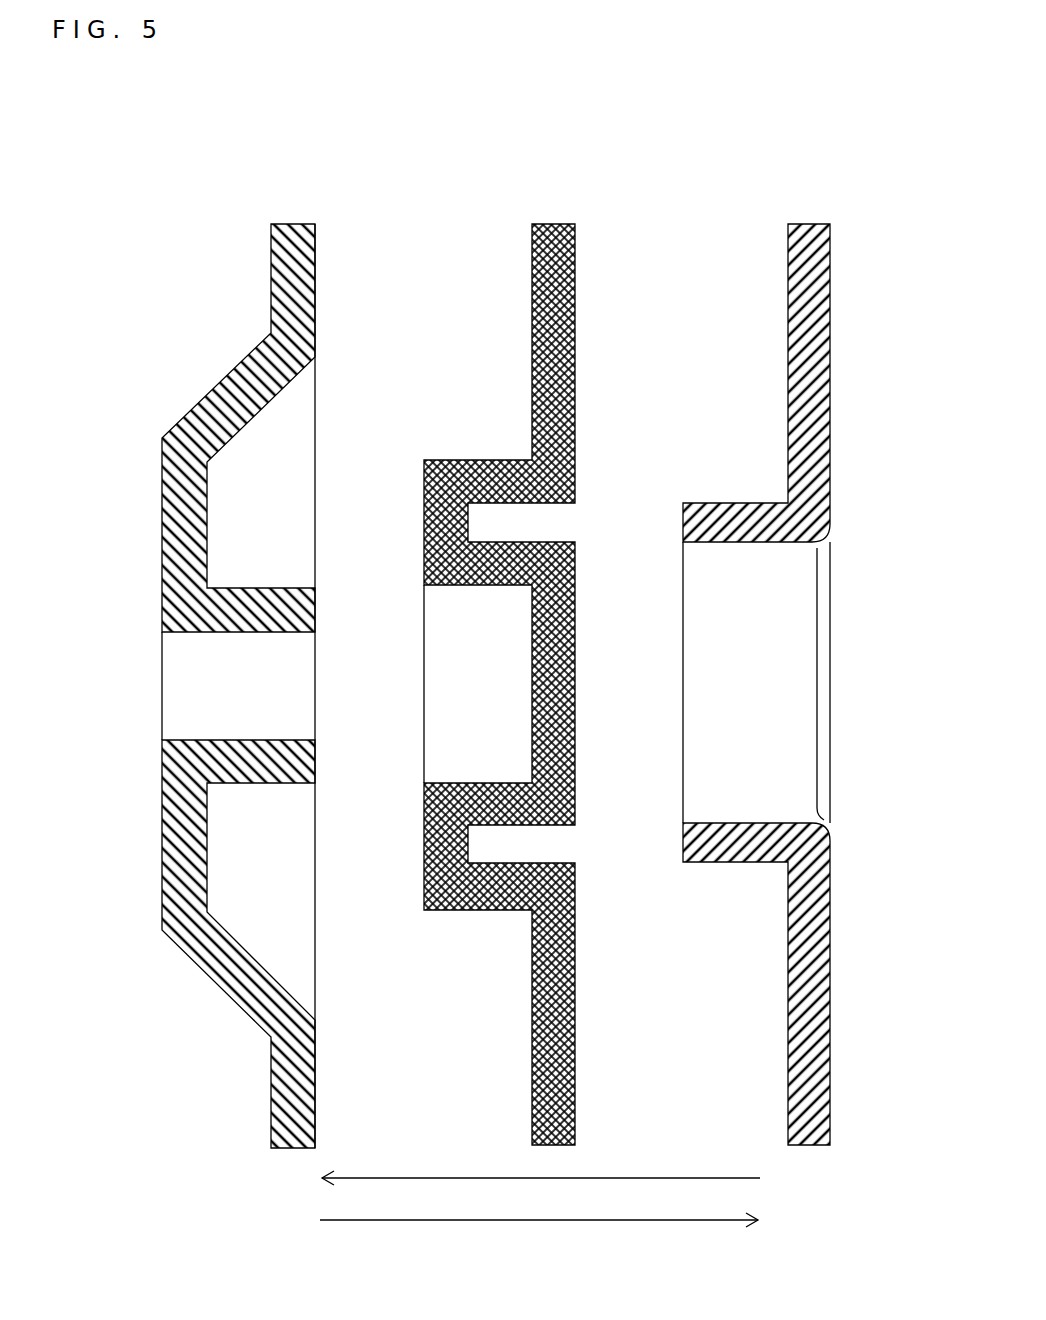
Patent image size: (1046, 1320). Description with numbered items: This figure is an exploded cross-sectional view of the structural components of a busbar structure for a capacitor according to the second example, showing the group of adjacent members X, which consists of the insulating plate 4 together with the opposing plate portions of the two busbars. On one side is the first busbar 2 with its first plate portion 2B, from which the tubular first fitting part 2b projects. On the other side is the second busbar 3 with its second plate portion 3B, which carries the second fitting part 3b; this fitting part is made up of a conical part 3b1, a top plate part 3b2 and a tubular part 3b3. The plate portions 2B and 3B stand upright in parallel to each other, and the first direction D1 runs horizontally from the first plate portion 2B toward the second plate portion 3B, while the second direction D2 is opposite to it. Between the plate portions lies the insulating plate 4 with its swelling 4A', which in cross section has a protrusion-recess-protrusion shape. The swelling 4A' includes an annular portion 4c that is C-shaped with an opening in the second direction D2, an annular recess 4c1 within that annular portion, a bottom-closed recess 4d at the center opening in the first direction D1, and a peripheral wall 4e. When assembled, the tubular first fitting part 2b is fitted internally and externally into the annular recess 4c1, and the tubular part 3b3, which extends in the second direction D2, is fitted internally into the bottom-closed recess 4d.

The group of adjacent members X is at (222, 172).
The first busbar 2 is at (802, 198).
The first plate portion 2B is at (790, 392).
The first fitting part 2b is at (730, 523).
The second busbar 3 is at (285, 198).
The second plate portion 3B is at (278, 260).
The second fitting part 3b is at (268, 587).
The conical part 3b1 is at (226, 393).
The top plate part 3b2 is at (183, 538).
The tubular part 3b3 is at (218, 620).
The insulating plate 4 is at (545, 198).
The swelling 4A' is at (445, 466).
The annular portion 4c is at (440, 522).
The annular recess 4c1 is at (553, 523).
The peripheral wall 4e is at (498, 567).
The bottom-closed recess 4d is at (458, 715).
The first direction D1 is at (516, 1180).
The second direction D2 is at (566, 1222).